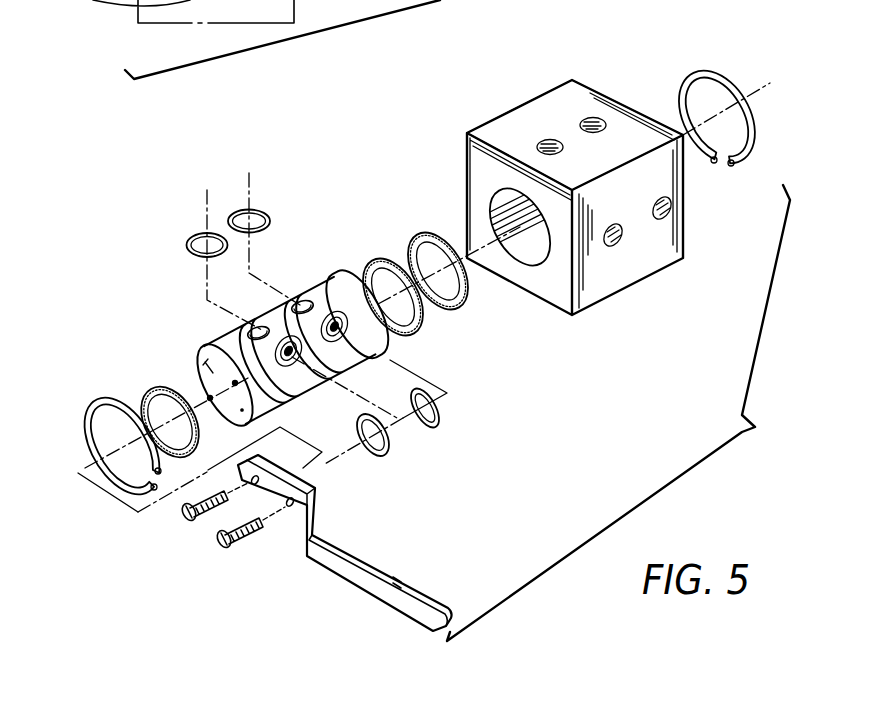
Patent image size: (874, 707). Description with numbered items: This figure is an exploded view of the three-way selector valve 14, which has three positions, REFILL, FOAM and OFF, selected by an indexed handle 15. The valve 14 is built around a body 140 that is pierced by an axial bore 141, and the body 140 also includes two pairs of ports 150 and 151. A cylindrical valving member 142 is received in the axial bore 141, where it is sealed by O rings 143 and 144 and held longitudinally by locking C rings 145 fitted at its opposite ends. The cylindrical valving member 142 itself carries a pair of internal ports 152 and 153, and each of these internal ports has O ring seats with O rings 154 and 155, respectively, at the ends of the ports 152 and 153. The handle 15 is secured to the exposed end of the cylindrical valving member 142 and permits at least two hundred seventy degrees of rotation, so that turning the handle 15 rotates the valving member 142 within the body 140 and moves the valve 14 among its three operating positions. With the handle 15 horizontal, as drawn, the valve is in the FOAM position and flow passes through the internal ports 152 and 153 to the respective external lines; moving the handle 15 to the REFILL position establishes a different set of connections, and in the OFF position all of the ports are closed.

The three-way selector valve 14 is at (520, 106).
The indexed handle 15 is at (350, 572).
The body 140 is at (556, 84).
The axial bore 141 is at (521, 210).
The cylindrical valving member 142 is at (337, 276).
The O ring 143 is at (418, 237).
The O ring 144 is at (160, 392).
The locking C ring 145 is at (708, 78).
The port 150 is at (546, 146).
The port 151 is at (597, 124).
The internal port 152 is at (262, 328).
The internal port 153 is at (303, 302).
The O ring 154 is at (197, 233).
The O ring 155 is at (265, 212).